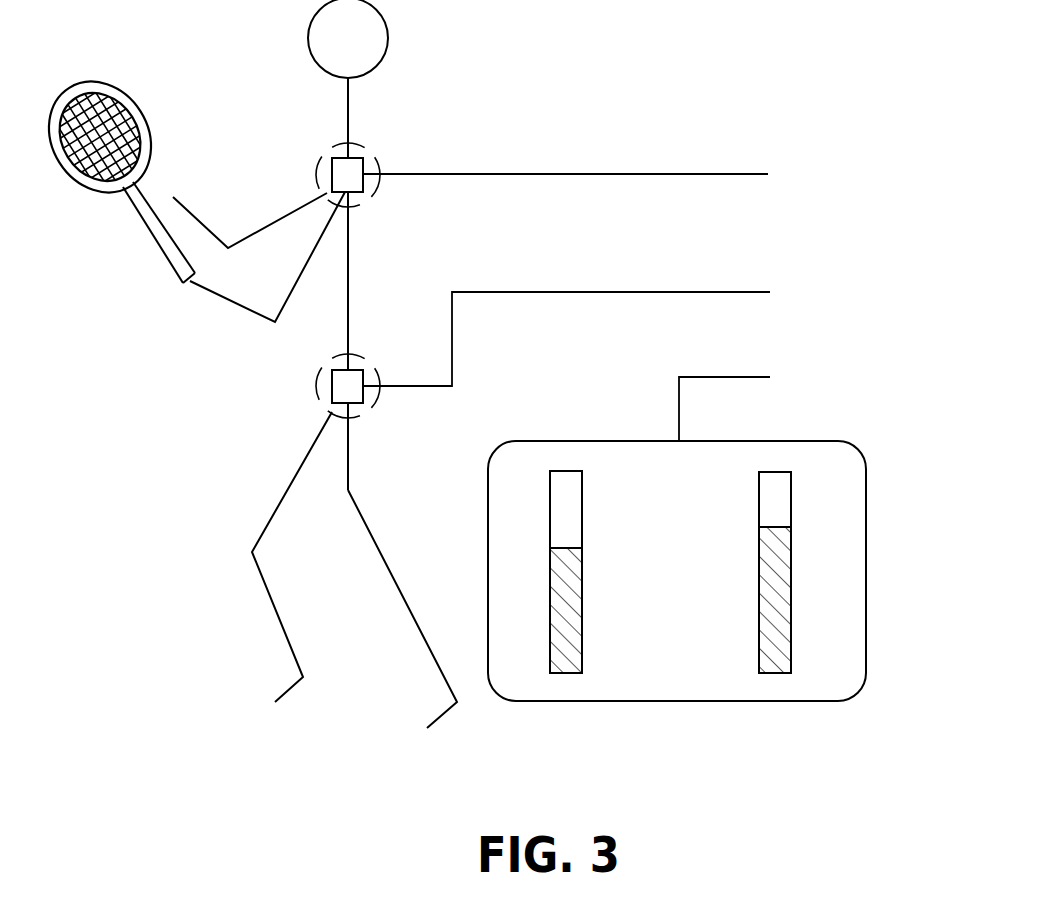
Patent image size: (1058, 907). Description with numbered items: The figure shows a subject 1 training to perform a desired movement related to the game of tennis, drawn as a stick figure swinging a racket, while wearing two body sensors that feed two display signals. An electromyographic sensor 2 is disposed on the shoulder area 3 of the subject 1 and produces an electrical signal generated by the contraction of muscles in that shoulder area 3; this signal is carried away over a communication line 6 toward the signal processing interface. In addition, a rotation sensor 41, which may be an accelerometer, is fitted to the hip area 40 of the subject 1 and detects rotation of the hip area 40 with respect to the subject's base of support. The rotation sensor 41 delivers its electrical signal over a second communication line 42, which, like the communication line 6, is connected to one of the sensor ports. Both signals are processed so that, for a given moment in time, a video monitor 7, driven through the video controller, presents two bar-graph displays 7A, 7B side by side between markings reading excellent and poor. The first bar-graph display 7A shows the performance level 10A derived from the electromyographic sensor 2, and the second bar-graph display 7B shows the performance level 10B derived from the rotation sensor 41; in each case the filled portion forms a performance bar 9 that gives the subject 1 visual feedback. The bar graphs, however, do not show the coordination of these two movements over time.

The subject 1 is at (348, 100).
The electromyographic sensor 2 is at (350, 170).
The shoulder area 3 is at (358, 203).
The communication line 6 is at (590, 174).
The hip area 40 is at (355, 380).
The rotation sensor 41 is at (360, 413).
The communication line 42 is at (610, 292).
The video monitor 7 is at (701, 531).
The bar-graph display 7A is at (548, 527).
The bar-graph display 7B is at (791, 508).
The performance bar 9 is at (582, 596).
The performance level 10A is at (565, 548).
The performance level 10B is at (775, 528).